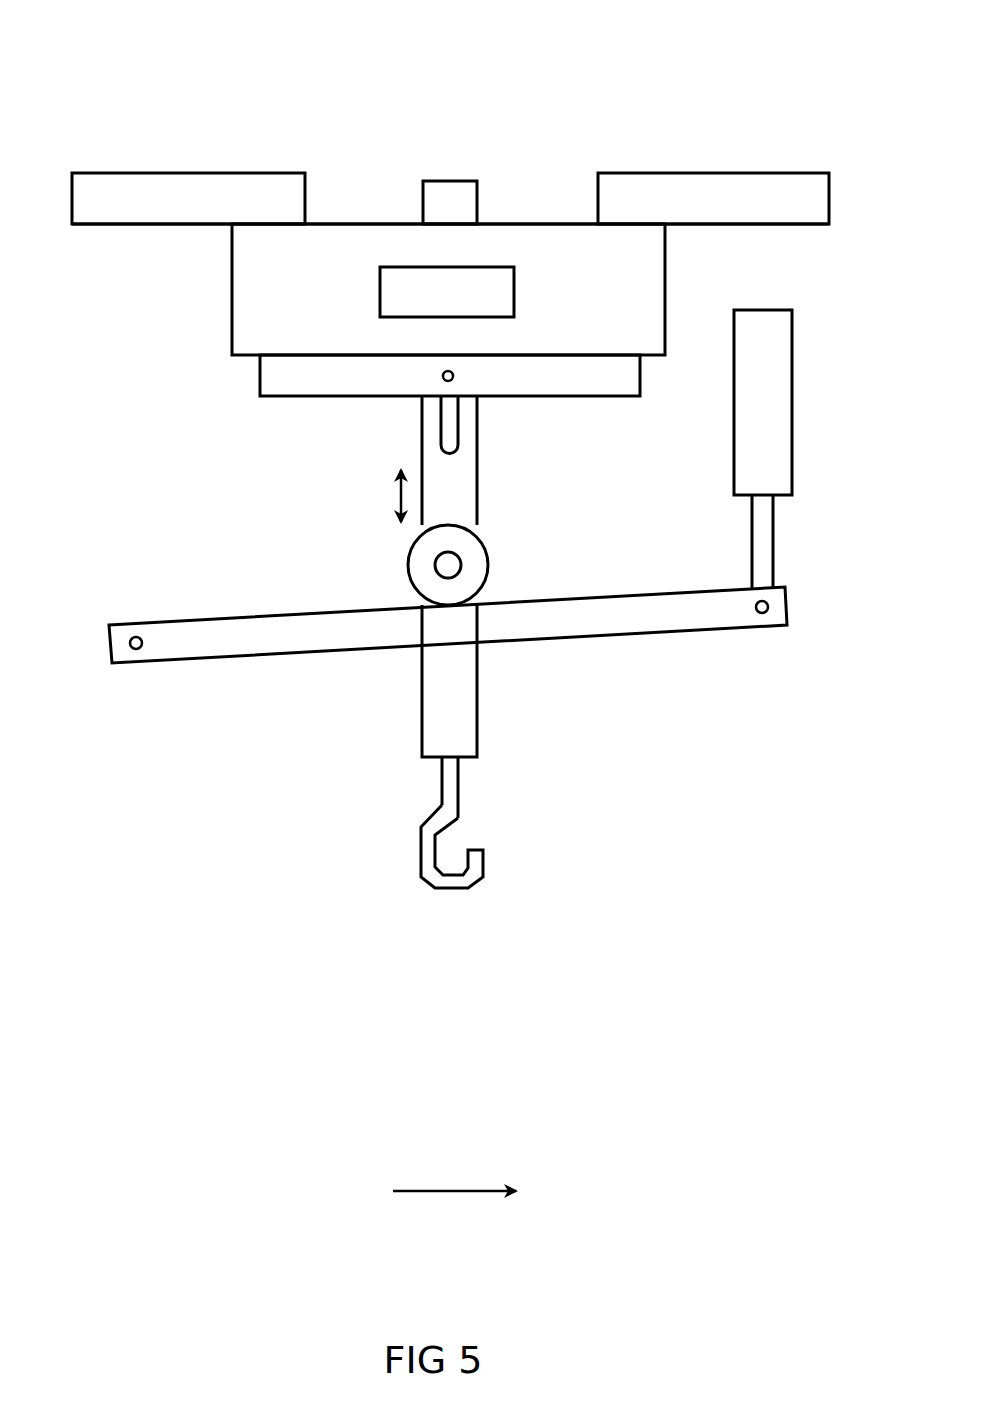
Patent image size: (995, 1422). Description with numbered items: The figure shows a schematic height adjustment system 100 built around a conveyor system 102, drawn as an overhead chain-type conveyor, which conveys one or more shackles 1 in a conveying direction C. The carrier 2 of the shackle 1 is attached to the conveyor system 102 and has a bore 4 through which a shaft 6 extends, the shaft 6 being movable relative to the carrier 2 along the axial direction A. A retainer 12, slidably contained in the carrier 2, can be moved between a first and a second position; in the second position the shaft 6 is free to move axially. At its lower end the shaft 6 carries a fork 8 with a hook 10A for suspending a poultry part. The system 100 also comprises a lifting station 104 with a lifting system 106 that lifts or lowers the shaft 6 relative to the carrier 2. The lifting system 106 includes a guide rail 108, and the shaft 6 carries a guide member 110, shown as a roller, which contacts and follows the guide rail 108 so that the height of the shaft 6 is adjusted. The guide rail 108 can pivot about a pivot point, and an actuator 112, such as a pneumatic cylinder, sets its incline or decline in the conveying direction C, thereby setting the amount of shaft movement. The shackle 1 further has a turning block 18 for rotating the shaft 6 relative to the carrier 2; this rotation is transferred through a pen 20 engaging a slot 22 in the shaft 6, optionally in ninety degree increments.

The height adjustment system 100 is at (450, 490).
The shackle 1 is at (692, 272).
The conveyor system 102 is at (193, 168).
The bore 4 is at (481, 219).
The carrier 2 is at (279, 253).
The retainer 12 is at (404, 262).
The turning block 18 is at (256, 378).
The pen 20 is at (443, 382).
The shaft 6 is at (507, 576).
The slot 22 is at (451, 432).
The guide member 110 is at (494, 555).
The guide rail 108 is at (270, 662).
The actuator 112 is at (730, 468).
The fork 8 is at (463, 791).
The hook 10A is at (450, 893).
The axial direction A is at (397, 493).
The lifting station 104 is at (266, 812).
The lifting system 106 is at (600, 758).
The conveying direction C is at (438, 1197).